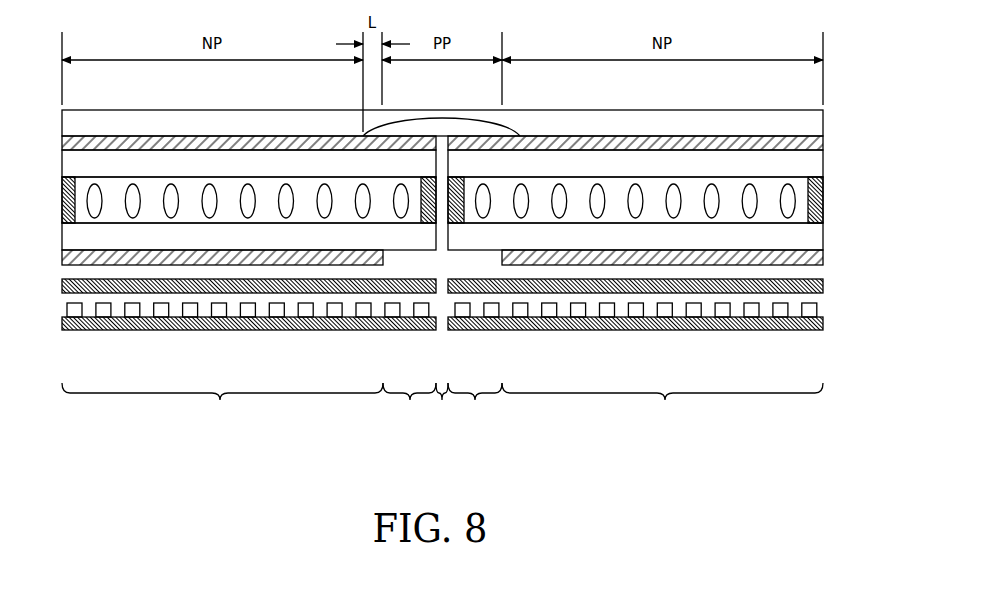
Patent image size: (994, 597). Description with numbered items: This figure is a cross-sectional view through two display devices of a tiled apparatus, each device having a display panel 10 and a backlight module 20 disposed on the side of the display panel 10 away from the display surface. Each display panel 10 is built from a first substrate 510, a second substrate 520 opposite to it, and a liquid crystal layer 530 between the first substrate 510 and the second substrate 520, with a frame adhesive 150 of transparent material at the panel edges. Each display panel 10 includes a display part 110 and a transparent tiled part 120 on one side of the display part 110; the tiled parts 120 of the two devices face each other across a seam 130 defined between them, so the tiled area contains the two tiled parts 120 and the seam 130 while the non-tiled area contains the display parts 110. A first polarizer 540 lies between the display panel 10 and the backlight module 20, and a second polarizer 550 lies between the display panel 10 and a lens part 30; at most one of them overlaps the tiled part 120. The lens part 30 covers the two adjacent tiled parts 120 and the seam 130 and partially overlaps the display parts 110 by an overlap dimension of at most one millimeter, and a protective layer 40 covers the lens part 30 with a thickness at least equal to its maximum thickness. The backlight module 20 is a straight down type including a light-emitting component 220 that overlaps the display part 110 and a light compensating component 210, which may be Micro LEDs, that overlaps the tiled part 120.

The display panel 10 is at (488, 206).
The backlight module 20 is at (469, 329).
The lens part 30 is at (440, 130).
The protective layer 40 is at (805, 126).
The display part 110 is at (442, 405).
The tiled part 120 is at (442, 405).
The seam 130 is at (441, 405).
The frame adhesive 150 is at (67, 210).
The light compensating component 210 is at (392, 310).
The light-emitting component 220 is at (135, 310).
The first substrate 510 is at (480, 236).
The second substrate 520 is at (805, 170).
The liquid crystal layer 530 is at (832, 178).
The first polarizer 540 is at (808, 261).
The second polarizer 550 is at (808, 146).